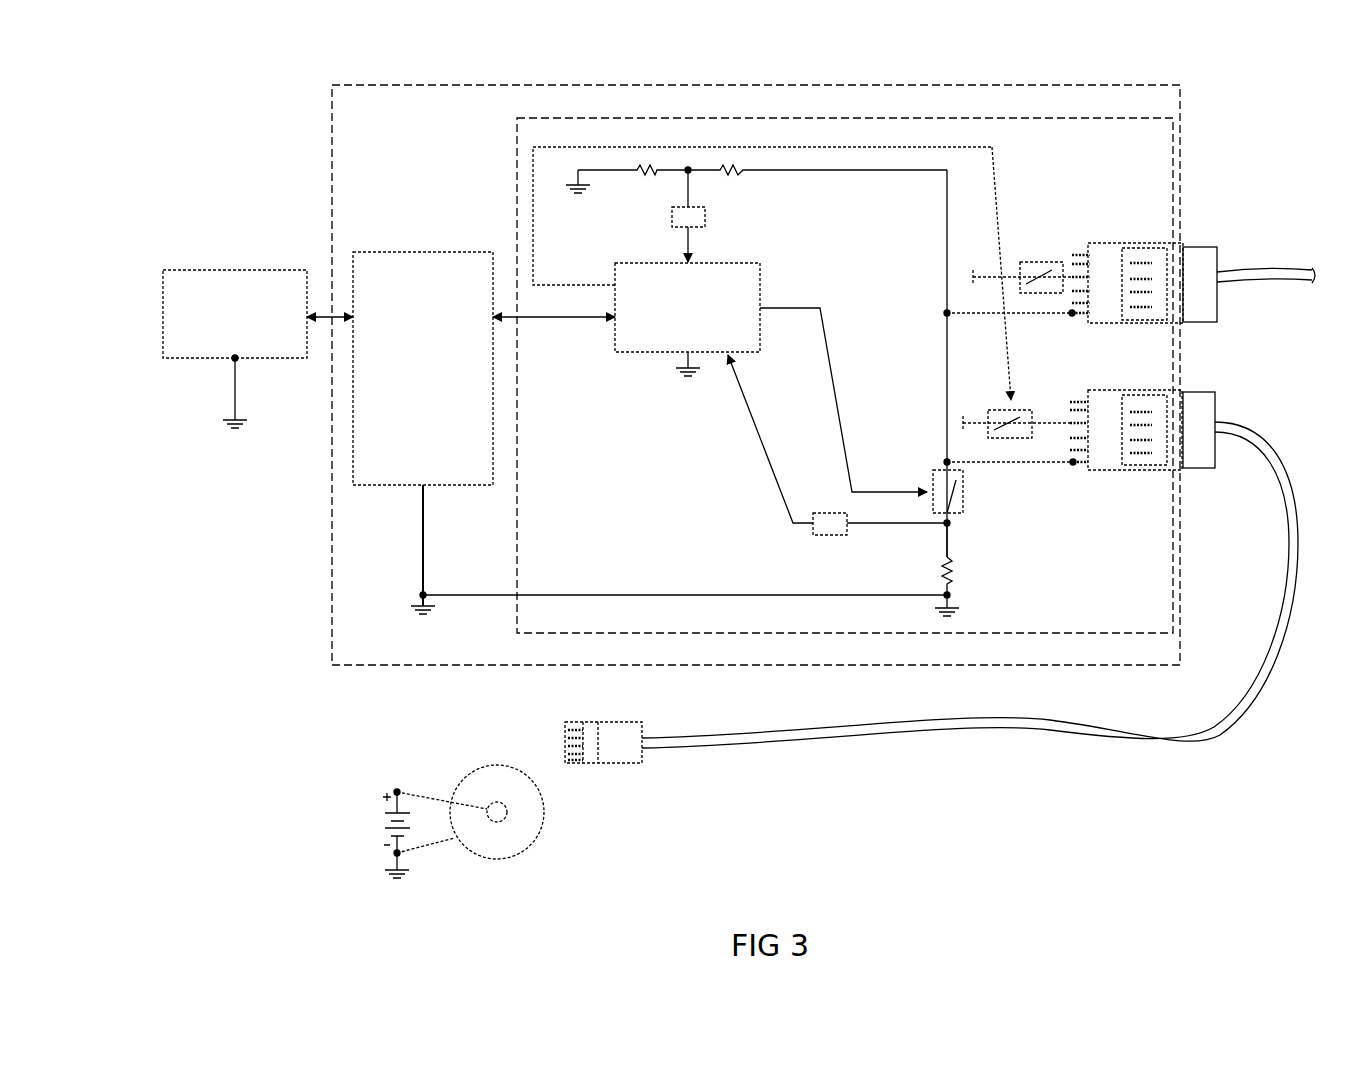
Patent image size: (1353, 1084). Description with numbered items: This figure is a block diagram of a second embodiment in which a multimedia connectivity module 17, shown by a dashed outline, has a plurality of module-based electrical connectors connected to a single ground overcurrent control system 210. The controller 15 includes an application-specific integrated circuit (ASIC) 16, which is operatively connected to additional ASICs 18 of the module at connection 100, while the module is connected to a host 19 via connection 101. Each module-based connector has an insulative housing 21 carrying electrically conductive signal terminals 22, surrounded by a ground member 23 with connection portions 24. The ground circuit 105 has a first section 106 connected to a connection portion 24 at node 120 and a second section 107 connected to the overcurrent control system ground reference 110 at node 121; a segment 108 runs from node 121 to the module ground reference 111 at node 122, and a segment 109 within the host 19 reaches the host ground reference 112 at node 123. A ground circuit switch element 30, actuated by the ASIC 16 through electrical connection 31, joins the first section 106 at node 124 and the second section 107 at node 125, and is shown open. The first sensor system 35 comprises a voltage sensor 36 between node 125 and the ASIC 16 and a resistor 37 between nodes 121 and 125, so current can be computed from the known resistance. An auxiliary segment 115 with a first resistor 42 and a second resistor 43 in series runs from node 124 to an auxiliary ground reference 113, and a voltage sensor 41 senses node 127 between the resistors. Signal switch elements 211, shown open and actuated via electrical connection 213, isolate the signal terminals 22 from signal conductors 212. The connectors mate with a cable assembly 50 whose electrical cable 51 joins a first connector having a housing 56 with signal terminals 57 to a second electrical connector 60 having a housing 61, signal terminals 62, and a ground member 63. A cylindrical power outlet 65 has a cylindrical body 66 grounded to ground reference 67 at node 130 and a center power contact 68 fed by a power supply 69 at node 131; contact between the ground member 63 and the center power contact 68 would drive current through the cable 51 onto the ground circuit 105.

The controller 15 is at (288, 100).
The application-specific integrated circuit 16 is at (770, 280).
The multimedia connectivity module 17 is at (368, 85).
The ASICs 18 is at (421, 252).
The host 19 is at (193, 272).
The insulative housing 21 is at (1115, 322).
The electrically conductive signal terminals 22 is at (1072, 274).
The ground member 23 is at (1100, 242).
The connection portions 24 is at (1082, 320).
The ground circuit switch element 30 is at (935, 476).
The electrical connection 31 is at (835, 355).
The first sensor system 35 is at (733, 463).
The voltage sensor 36 is at (831, 514).
The resistor 37 is at (940, 568).
The voltage sensor 41 is at (705, 217).
The first resistor 42 is at (735, 180).
The second resistor 43 is at (647, 180).
The cable assembly 50 is at (1202, 760).
The electrical cable 51 is at (1262, 268).
The housing 56 is at (1198, 250).
The signal terminals 57 is at (1146, 276).
The second electrical connector 60 is at (620, 722).
The housing 61 is at (620, 760).
The signal terminals 62 is at (572, 741).
The ground member 63 is at (565, 764).
The cylindrical power outlet 65 is at (440, 745).
The cylindrical body 66 is at (540, 835).
The ground reference 67 is at (405, 878).
The center power contact 68 is at (490, 766).
The power supply 69 is at (385, 822).
The connection 100 is at (561, 318).
The connection 101 is at (325, 310).
The ground circuit 105 is at (788, 575).
The first section 106 is at (968, 316).
The second section 107 is at (950, 548).
The segment 108 is at (632, 593).
The segment 109 is at (232, 392).
The overcurrent control system ground reference 110 is at (680, 376).
The multimedia connectivity module ground reference 111 is at (430, 614).
The host ground reference 112 is at (242, 428).
The auxiliary ground reference 113 is at (577, 188).
The auxiliary segment 115 is at (916, 172).
The node 120 is at (1068, 316).
The node 121 is at (952, 596).
The node 122 is at (420, 595).
The node 123 is at (238, 359).
The node 124 is at (945, 311).
The node 125 is at (952, 523).
The node 127 is at (688, 168).
The node 130 is at (395, 853).
The node 131 is at (395, 791).
The ground overcurrent control system 210 is at (830, 118).
The signal switch elements 211 is at (1040, 264).
The signal conductors 212 is at (990, 276).
The electrical connection 213 is at (570, 285).